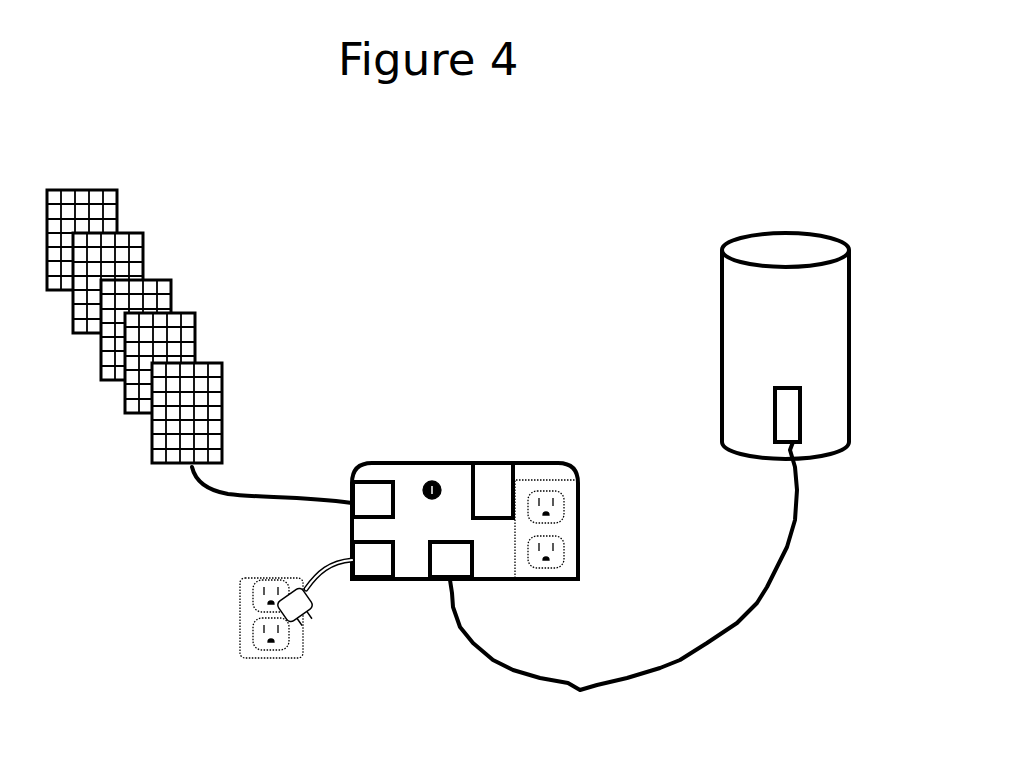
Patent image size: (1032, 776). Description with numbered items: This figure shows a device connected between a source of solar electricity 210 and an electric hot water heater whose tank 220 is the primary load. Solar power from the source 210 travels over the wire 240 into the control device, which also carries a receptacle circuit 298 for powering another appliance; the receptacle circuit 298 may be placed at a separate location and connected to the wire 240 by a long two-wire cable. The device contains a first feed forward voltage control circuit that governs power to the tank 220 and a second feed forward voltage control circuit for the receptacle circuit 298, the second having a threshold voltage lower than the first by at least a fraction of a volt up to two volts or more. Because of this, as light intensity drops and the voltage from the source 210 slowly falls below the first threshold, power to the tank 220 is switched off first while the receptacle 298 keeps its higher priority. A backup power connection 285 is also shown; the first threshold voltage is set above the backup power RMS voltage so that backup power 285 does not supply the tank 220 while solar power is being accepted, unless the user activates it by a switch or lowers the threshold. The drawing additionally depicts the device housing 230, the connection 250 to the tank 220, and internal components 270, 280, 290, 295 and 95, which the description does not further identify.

The source of solar electricity 210 is at (293, 390).
The tank 220 is at (775, 228).
The power controller box 230 is at (470, 400).
The wire 240 is at (225, 497).
The battery cable 250 is at (777, 578).
The charge controller 270 is at (375, 502).
The AC input module 280 is at (375, 562).
The battery connection module 290 is at (440, 562).
The inverter 295 is at (493, 478).
The indicator 95 is at (430, 480).
The receptacle circuit 298 is at (565, 525).
The backup power 285 is at (240, 628).